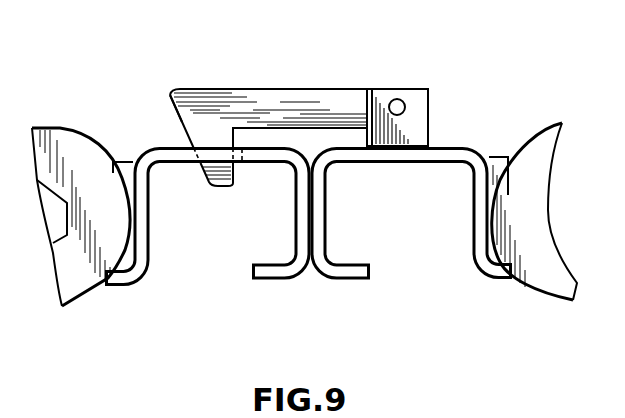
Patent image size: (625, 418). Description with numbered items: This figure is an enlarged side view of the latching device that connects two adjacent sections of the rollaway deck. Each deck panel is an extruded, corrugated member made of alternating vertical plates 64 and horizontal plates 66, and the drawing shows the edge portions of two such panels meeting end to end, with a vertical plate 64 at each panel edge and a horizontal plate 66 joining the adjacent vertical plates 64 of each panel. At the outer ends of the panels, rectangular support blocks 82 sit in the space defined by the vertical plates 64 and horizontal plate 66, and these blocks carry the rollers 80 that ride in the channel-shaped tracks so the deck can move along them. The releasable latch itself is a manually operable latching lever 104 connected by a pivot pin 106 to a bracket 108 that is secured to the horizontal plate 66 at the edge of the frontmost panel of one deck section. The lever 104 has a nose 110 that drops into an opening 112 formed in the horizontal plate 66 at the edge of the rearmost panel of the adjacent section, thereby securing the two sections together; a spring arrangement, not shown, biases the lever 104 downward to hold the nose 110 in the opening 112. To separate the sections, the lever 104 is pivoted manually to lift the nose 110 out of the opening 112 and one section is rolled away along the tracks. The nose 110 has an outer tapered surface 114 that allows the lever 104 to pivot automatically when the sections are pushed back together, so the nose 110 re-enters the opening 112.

The vertical plate 64 is at (297, 235).
The horizontal plate 66 is at (272, 162).
The roller 80 is at (77, 278).
The support block 82 is at (123, 162).
The latching lever 104 is at (287, 95).
The pivot pin 106 is at (397, 99).
The bracket 108 is at (420, 117).
The nose 110 is at (218, 187).
The opening 112 is at (197, 167).
The tapered surface 114 is at (178, 118).